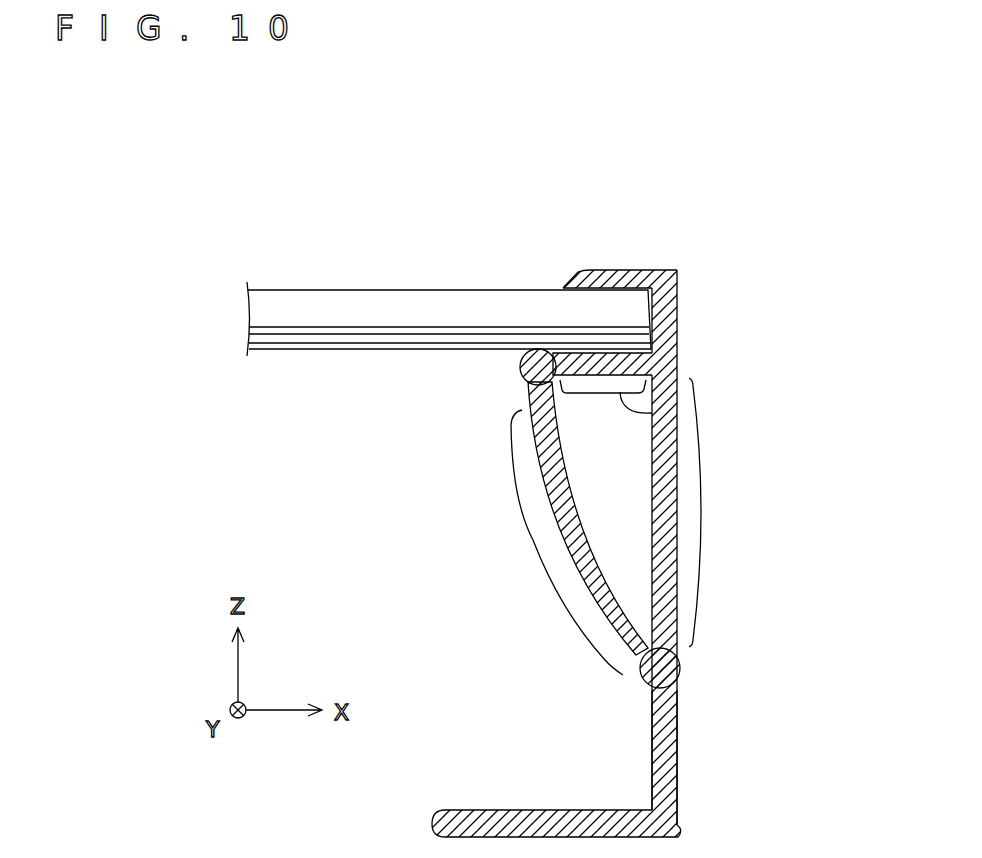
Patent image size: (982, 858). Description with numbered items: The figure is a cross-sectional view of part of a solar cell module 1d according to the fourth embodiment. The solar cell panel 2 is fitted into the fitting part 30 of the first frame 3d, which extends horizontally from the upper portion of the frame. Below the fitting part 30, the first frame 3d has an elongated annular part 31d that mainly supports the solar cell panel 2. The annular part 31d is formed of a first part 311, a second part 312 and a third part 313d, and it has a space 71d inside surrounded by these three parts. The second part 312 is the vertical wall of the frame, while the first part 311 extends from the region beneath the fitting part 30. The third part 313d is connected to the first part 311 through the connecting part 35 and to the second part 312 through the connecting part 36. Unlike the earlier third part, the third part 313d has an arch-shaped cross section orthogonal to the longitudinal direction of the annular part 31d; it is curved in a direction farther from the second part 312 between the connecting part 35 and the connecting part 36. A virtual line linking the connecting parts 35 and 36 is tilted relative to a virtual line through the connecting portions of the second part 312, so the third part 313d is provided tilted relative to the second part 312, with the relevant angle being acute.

The solar cell module 1d is at (236, 256).
The solar cell panel 2 is at (403, 284).
The first frame 3d is at (677, 272).
The fitting part 30 is at (670, 318).
The annular part 31d is at (822, 393).
The first part 311 is at (693, 367).
The second part 312 is at (704, 514).
The third part 313d is at (580, 640).
The connecting part 35 is at (521, 368).
The connecting part 36 is at (681, 665).
The space 71d is at (572, 435).